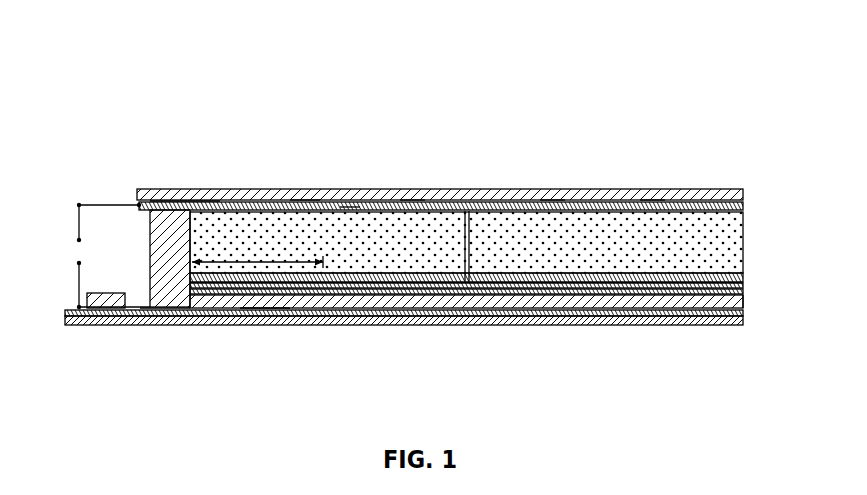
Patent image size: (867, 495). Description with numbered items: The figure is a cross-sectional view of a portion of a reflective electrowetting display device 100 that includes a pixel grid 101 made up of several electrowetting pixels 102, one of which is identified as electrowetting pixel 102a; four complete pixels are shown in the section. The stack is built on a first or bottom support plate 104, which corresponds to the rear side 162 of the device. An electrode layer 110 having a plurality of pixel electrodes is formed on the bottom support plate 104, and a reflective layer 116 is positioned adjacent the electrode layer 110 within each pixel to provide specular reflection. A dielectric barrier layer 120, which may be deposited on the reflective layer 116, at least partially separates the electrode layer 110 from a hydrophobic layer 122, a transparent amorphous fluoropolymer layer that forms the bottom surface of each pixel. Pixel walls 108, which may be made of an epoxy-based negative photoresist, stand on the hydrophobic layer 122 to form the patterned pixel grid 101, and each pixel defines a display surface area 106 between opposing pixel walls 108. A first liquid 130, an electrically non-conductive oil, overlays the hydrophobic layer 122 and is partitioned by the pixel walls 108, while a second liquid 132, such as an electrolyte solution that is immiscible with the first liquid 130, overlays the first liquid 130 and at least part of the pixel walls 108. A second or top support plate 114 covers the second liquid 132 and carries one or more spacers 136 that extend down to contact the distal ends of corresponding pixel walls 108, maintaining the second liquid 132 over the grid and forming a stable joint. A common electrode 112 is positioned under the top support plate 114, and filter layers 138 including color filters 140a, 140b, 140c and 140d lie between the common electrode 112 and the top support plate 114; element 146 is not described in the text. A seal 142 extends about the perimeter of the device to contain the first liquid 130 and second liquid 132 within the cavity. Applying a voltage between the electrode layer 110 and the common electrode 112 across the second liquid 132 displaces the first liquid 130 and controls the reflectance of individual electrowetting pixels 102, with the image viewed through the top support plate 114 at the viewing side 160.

The reflective electrowetting display device 100 is at (735, 52).
The pixel grid 101 is at (496, 97).
The electrowetting pixels 102 is at (423, 349).
The electrowetting pixel 102a is at (260, 347).
The bottom support plate 104 is at (70, 324).
The display surface area 106 is at (247, 262).
The pixel walls 108 is at (328, 282).
The electrode layer 110 is at (132, 310).
The common electrode 112 is at (743, 205).
The top support plate 114 is at (138, 190).
The reflective layer 116 is at (764, 305).
The dielectric barrier layer 120 is at (743, 291).
The hydrophobic layer 122 is at (743, 285).
The first liquid 130 is at (193, 278).
The second liquid 132 is at (455, 268).
The spacers 136 is at (485, 207).
The filter layers 138 is at (183, 200).
The color filter 140a is at (305, 200).
The color filter 140b is at (412, 199).
The color filter 140c is at (550, 198).
The color filter 140d is at (650, 195).
The seal 142 is at (160, 237).
The reflector 146 is at (350, 207).
The viewing side 160 is at (386, 123).
The rear side 162 is at (160, 347).